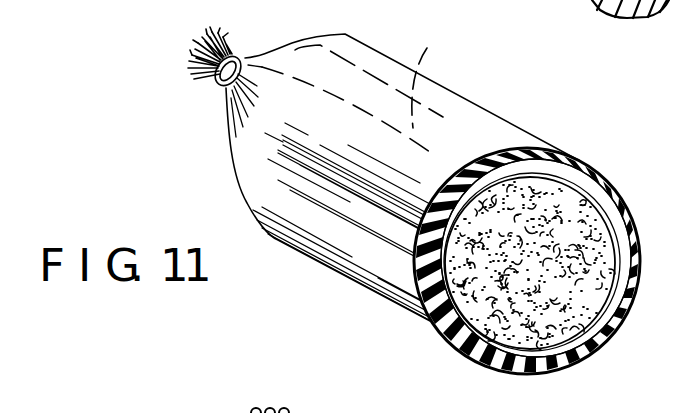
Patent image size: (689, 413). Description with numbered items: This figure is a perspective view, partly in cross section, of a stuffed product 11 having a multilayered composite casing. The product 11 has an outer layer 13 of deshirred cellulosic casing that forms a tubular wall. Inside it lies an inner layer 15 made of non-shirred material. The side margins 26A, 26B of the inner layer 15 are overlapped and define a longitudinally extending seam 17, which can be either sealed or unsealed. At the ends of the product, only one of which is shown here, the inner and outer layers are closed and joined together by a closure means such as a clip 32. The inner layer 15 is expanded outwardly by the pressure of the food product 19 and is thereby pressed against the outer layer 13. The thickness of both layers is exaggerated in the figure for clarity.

The stuffed product 11 is at (533, 119).
The outer layer 13 is at (490, 370).
The inner layer 15 is at (466, 348).
The longitudinally extending seam 17 is at (430, 49).
The food product 19 is at (568, 310).
The side margin 26A is at (490, 176).
The side margin 26B is at (491, 151).
The clip 32 is at (240, 56).